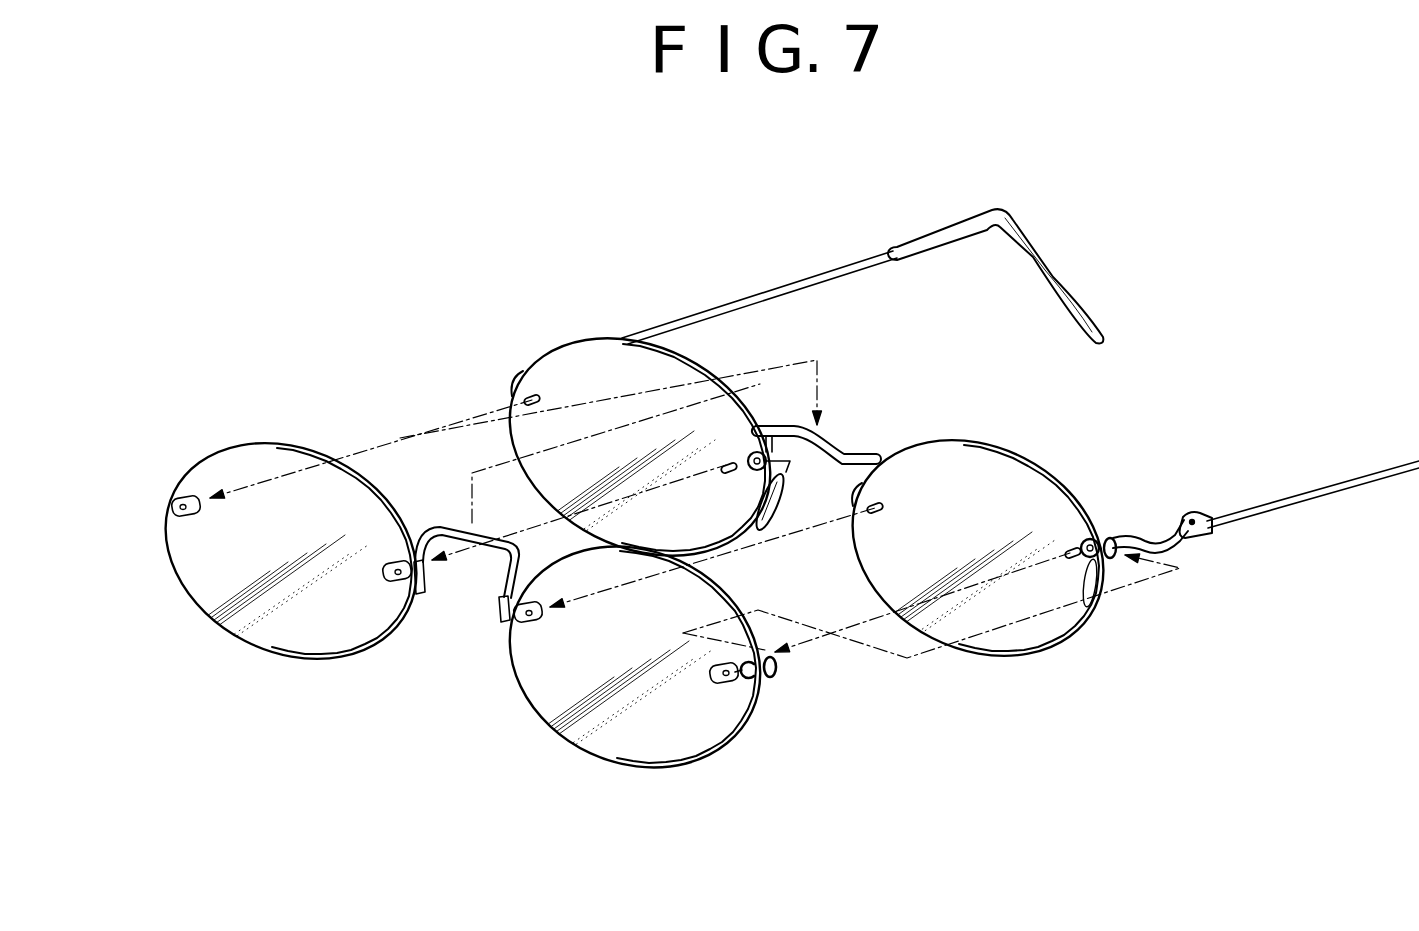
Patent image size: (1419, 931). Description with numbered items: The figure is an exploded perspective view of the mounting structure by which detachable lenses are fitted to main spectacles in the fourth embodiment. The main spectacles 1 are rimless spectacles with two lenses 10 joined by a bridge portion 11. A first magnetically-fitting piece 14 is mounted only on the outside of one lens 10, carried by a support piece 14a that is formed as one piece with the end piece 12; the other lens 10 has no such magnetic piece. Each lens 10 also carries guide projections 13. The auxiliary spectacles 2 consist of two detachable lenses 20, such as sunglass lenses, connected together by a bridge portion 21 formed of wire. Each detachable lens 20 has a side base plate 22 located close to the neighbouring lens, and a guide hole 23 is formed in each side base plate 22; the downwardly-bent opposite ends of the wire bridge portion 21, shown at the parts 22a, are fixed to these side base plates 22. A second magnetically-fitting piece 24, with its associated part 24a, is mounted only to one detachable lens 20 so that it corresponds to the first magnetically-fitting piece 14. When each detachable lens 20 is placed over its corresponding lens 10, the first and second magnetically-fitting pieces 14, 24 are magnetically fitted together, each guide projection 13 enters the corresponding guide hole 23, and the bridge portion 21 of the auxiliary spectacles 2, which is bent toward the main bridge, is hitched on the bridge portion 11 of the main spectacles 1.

The main spectacles 1 is at (946, 453).
The auxiliary spectacles 2 is at (488, 626).
The lens 10 is at (697, 368).
The bridge portion 11 is at (835, 446).
The end piece 12 is at (1095, 598).
The guide projection 13 is at (546, 400).
The first magnetically-fitting piece 14 is at (1124, 534).
The support piece 14a is at (1102, 532).
The detachable lens 20 is at (268, 637).
The bridge portion 21 is at (457, 522).
The side base plate 22 is at (190, 522).
The engaging bar 22a is at (427, 580).
The guide hole 23 is at (190, 507).
The second magnetically-fitting piece 24 is at (780, 668).
The hook ring 24a is at (762, 687).